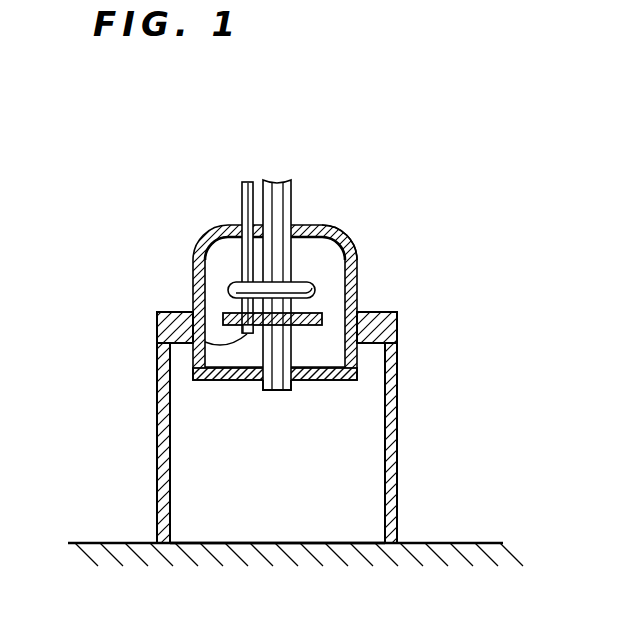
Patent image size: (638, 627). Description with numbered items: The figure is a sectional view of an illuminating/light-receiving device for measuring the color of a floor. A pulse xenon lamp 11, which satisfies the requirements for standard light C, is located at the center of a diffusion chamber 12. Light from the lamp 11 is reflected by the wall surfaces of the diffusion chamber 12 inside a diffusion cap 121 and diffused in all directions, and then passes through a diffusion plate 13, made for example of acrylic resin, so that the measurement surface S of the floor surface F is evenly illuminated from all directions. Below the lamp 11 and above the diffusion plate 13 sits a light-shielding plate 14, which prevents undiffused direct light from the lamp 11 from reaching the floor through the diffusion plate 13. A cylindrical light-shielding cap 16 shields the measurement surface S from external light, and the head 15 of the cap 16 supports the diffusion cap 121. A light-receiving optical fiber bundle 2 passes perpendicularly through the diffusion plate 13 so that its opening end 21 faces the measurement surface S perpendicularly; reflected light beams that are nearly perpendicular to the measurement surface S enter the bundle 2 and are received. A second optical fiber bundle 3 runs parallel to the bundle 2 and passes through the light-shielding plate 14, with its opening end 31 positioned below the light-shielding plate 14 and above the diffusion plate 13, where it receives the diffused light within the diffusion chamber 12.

The light-receiving optical fiber bundle 2 is at (291, 202).
The optical fiber bundle 3 is at (243, 194).
The pulse xenon lamp 11 is at (312, 283).
The diffusion chamber 12 is at (313, 250).
The diffusion cap 121 is at (343, 233).
The diffusion plate 13 is at (323, 382).
The light-shielding plate 14 is at (322, 313).
The head 15 is at (397, 325).
The light-shielding cap 16 is at (158, 438).
The opening end 21 is at (278, 390).
The opening end 31 is at (196, 330).
The measurement surface S is at (197, 542).
The floor surface F is at (420, 543).